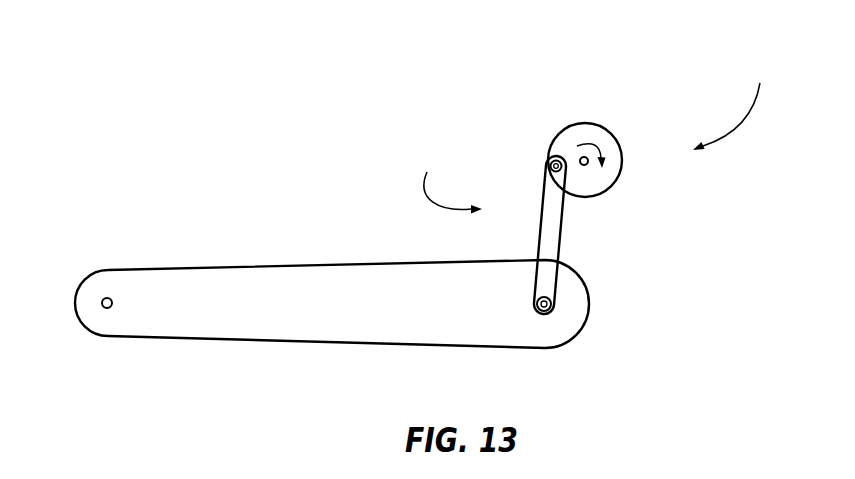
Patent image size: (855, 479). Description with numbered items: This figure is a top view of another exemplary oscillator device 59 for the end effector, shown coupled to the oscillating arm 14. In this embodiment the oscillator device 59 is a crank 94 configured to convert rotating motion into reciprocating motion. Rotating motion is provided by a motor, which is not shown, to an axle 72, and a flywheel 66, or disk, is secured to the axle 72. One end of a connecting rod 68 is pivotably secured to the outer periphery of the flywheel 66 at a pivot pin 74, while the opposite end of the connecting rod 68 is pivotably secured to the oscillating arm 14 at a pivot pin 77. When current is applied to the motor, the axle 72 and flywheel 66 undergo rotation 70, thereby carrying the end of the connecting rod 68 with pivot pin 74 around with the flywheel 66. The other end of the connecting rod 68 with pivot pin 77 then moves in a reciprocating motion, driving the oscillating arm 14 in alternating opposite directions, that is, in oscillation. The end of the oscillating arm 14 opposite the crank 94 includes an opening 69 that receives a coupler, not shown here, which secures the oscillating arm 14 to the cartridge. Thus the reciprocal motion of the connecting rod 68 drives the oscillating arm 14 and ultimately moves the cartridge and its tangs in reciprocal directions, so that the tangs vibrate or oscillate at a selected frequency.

The oscillating arm 14 is at (280, 308).
The oscillator device 59 is at (733, 104).
The flywheel 66 is at (605, 182).
The connecting rod 68 is at (554, 225).
The opening 69 is at (102, 303).
The rotation 70 is at (594, 146).
The axle 72 is at (579, 160).
The pivot pin 74 is at (550, 168).
The pivot pin 77 is at (545, 311).
The crank 94 is at (453, 181).